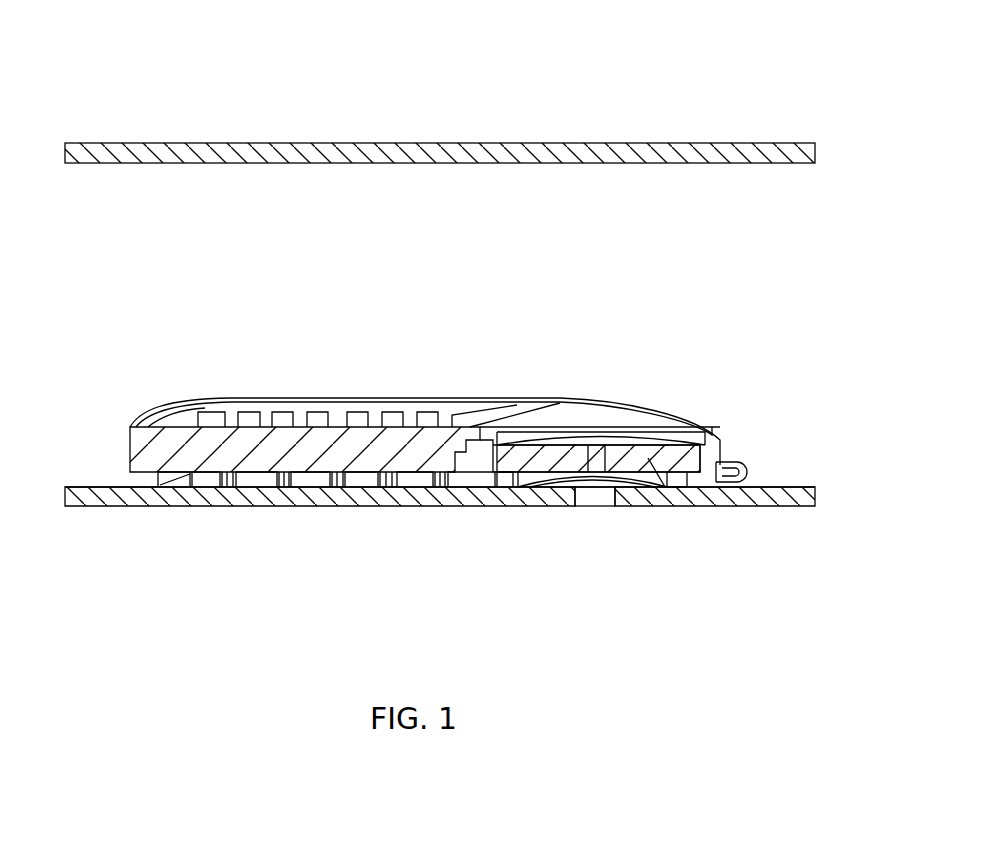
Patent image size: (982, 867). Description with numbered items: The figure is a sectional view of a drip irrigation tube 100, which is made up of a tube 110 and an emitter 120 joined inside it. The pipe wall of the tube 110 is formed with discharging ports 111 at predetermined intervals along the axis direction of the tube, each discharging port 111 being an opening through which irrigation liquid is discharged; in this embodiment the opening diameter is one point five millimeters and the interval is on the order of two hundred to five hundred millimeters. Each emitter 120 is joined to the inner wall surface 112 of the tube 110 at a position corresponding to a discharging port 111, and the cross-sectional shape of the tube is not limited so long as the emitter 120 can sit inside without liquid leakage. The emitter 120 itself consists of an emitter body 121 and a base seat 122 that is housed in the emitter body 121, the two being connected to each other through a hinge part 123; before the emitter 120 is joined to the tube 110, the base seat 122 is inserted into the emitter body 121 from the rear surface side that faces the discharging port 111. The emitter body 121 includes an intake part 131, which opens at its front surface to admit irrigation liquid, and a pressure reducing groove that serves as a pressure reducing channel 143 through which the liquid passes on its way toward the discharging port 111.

The drip irrigation tube 100 is at (764, 92).
The tube 110 is at (228, 143).
The discharging port 111 is at (592, 497).
The inner wall surface 112 is at (86, 487).
The emitter 120 is at (709, 332).
The emitter body 121 is at (568, 398).
The base seat 122 is at (660, 474).
The hinge part 123 is at (746, 470).
The intake part 131 is at (307, 410).
The pressure reducing channel 143 is at (403, 487).